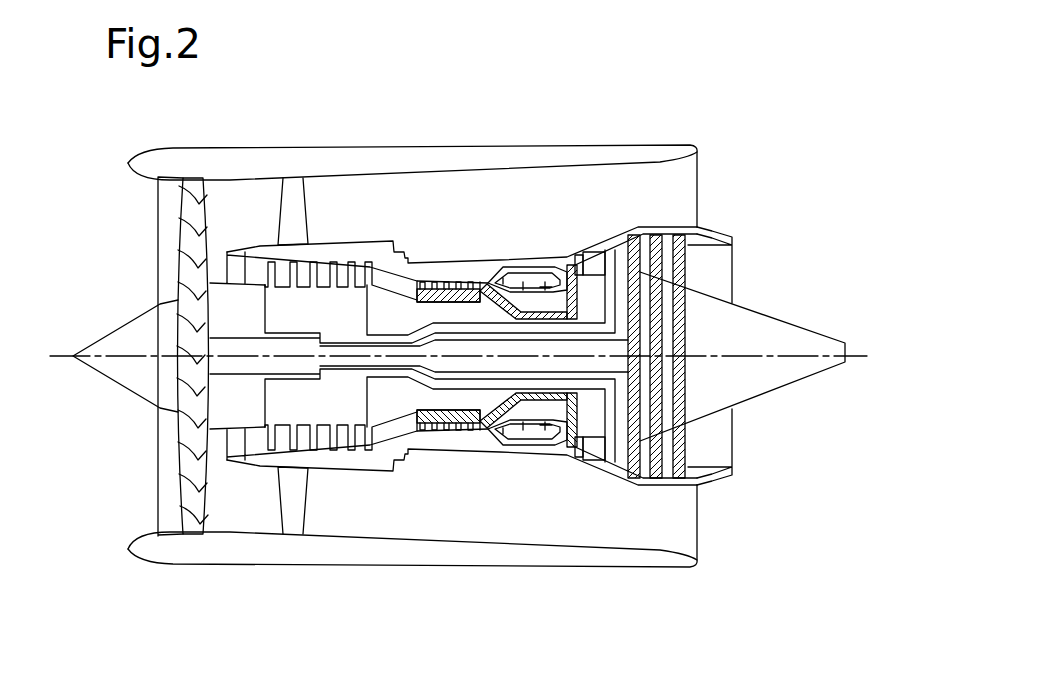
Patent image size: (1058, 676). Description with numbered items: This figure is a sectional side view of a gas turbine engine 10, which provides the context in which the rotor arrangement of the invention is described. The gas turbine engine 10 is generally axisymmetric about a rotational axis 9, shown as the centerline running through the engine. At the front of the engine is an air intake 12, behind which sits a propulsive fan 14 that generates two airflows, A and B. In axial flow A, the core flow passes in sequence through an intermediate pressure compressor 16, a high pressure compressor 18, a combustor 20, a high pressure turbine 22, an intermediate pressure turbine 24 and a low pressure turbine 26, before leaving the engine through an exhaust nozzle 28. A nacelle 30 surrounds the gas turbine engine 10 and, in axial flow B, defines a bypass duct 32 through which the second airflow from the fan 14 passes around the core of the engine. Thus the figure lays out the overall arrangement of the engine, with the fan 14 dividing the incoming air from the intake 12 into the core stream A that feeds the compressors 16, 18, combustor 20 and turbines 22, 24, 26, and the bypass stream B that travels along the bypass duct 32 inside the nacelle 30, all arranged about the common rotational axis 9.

The rotational axis 9 is at (730, 357).
The gas turbine engine 10 is at (112, 152).
The air intake 12 is at (173, 193).
The propulsive fan 14 is at (183, 178).
The intermediate pressure compressor 16 is at (293, 310).
The high pressure compressor 18 is at (436, 286).
The combustor 20 is at (533, 273).
The high pressure turbine 22 is at (570, 267).
The intermediate pressure turbine 24 is at (616, 268).
The low pressure turbine 26 is at (688, 238).
The exhaust nozzle 28 is at (715, 283).
The nacelle 30 is at (275, 177).
The bypass duct 32 is at (472, 210).
The airflow A is at (214, 270).
The airflow B is at (232, 210).